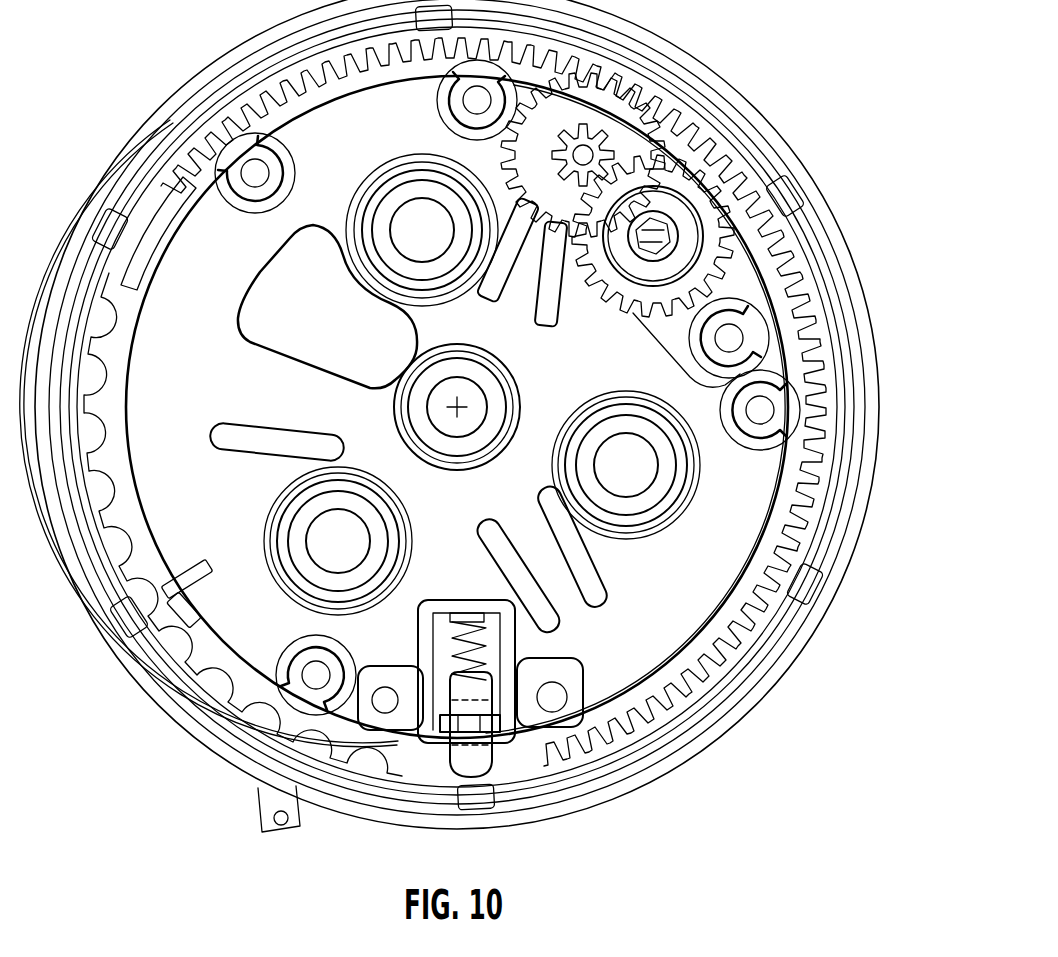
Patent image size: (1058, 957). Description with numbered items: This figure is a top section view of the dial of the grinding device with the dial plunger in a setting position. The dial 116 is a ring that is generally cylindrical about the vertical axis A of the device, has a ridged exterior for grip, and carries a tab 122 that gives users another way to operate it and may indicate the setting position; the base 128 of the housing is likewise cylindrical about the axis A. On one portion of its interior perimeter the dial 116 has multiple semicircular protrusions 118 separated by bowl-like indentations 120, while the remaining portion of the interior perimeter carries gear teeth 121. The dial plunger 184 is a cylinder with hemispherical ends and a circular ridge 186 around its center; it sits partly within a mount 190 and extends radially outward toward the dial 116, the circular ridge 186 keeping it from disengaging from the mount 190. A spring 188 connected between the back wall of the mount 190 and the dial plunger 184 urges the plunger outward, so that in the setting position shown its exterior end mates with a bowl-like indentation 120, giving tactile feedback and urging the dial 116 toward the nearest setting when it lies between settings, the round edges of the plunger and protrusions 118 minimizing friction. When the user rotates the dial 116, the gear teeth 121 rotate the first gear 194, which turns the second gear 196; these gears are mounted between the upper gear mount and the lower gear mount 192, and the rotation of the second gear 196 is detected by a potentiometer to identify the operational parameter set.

The dial 116 is at (869, 311).
The semicircular protrusions 118 is at (238, 687).
The bowl-like indentations 120 is at (207, 668).
The gear teeth 121 is at (805, 496).
The tab 122 is at (264, 813).
The base 128 is at (733, 513).
The dial plunger 184 is at (487, 762).
The circular ridge 186 is at (495, 728).
The spring 188 is at (455, 640).
The mount 190 is at (571, 711).
The lower gear mount 192 is at (769, 307).
The first gear 194 is at (636, 144).
The second gear 196 is at (710, 219).
The vertical axis A is at (460, 402).